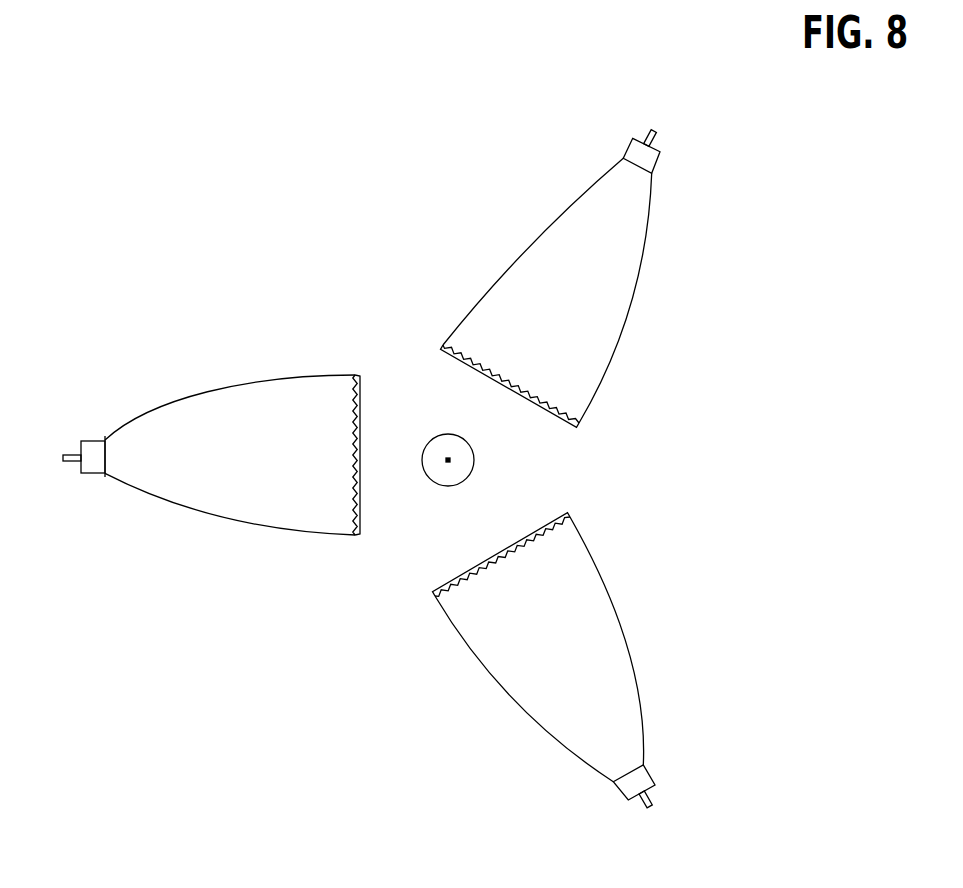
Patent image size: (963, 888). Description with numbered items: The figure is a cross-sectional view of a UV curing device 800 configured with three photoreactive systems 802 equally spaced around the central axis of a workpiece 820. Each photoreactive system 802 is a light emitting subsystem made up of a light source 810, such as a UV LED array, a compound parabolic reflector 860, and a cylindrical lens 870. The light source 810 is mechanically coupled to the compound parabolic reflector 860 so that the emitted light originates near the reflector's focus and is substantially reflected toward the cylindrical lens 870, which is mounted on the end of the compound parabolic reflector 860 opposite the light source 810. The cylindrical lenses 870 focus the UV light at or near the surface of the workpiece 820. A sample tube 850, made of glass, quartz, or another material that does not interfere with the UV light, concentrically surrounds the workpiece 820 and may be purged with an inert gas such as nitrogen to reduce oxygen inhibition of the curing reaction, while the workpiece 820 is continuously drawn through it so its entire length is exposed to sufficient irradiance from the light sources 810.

The UV curing device 800 is at (205, 126).
The photoreactive system 802 is at (395, 471).
The light source 810 is at (87, 476).
The workpiece 820 is at (457, 461).
The sample tube 850 is at (445, 484).
The compound parabolic reflector 860 is at (222, 520).
The cylindrical lens 870 is at (358, 378).